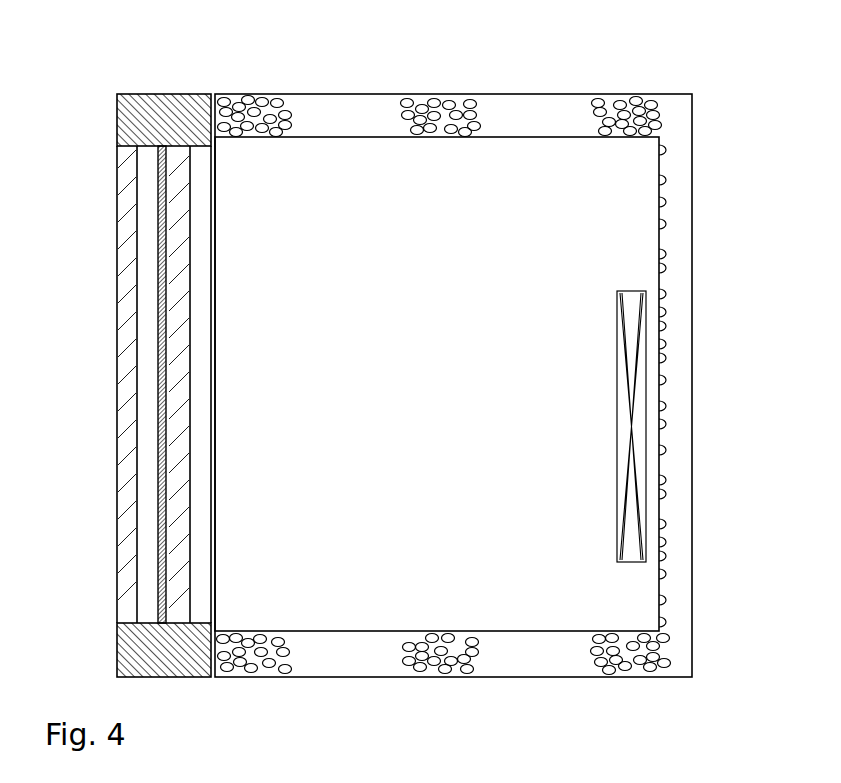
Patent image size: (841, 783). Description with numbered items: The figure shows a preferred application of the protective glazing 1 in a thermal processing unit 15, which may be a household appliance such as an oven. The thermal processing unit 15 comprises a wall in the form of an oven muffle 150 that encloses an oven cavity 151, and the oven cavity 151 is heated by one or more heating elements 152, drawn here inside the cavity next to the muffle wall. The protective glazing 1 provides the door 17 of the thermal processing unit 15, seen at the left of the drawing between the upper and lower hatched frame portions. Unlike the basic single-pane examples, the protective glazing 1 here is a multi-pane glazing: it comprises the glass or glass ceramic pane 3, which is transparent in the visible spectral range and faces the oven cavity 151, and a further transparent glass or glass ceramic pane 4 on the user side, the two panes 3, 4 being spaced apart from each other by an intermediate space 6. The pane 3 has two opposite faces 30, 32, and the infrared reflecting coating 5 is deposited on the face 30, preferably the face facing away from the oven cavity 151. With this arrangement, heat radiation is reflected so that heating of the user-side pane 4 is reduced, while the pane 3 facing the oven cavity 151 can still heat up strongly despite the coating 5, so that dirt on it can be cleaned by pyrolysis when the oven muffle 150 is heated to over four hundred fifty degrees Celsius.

The protective glazing 1 is at (92, 118).
The thermal processing unit 15 is at (228, 50).
The door 17 is at (137, 93).
The oven muffle 150 is at (692, 213).
The oven cavity 151 is at (444, 398).
The heating element 152 is at (646, 475).
The glass or glass ceramic pane 3 is at (157, 278).
The further transparent glass or glass ceramic pane 4 is at (117, 310).
The infrared reflecting coating 5 is at (158, 253).
The intermediate space 6 is at (155, 371).
The face 30 is at (157, 433).
The face 32 is at (195, 473).